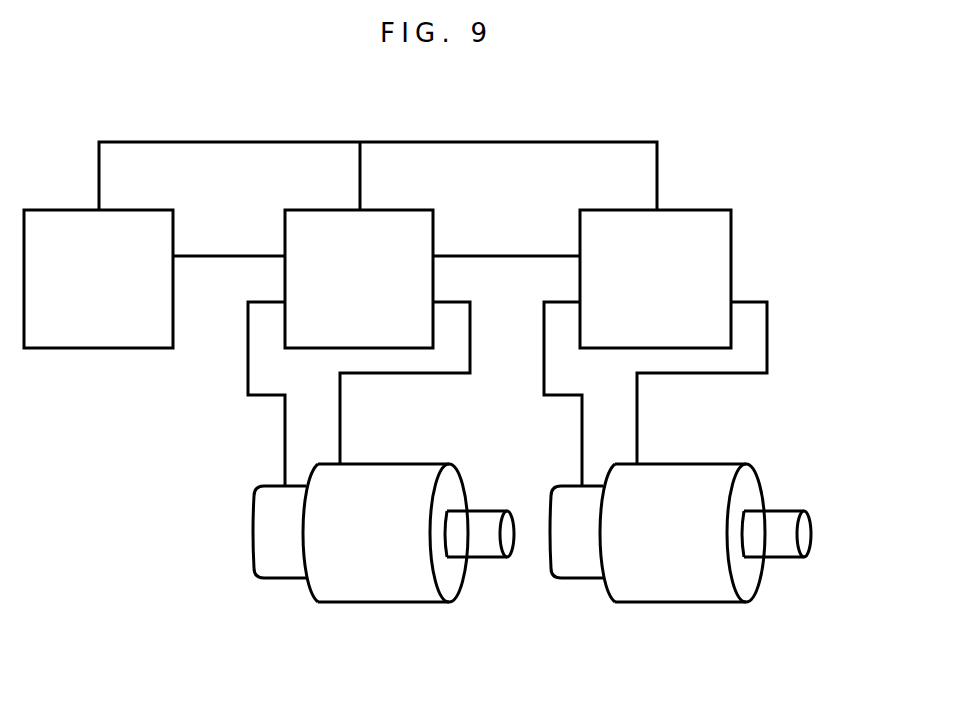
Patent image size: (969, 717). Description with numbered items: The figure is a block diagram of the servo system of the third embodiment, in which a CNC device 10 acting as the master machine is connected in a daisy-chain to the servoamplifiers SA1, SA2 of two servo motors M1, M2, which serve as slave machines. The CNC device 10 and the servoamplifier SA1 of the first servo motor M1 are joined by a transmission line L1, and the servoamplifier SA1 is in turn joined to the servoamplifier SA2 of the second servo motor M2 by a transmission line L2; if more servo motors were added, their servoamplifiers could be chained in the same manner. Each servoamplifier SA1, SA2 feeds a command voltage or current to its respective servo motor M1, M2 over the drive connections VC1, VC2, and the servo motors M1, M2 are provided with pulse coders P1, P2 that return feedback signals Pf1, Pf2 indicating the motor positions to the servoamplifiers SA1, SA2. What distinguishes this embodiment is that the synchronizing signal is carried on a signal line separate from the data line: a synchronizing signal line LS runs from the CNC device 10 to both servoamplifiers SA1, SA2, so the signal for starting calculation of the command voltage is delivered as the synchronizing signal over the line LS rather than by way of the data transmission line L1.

The CNC device 10 is at (70, 208).
The synchronizing signal line LS is at (377, 142).
The servoamplifier SA1 is at (397, 209).
The servoamplifier SA2 is at (695, 209).
The transmission line L1 is at (231, 255).
The transmission line L2 is at (489, 255).
The feedback signal Pf1 is at (247, 398).
The feedback signal Pf2 is at (560, 398).
The first velocity command / drive line VC1 is at (370, 375).
The second velocity command / drive line VC2 is at (687, 376).
The servo motor M1 is at (357, 607).
The servo motor M2 is at (672, 609).
The pulse coder P1 is at (285, 588).
The pulse coder P2 is at (582, 590).